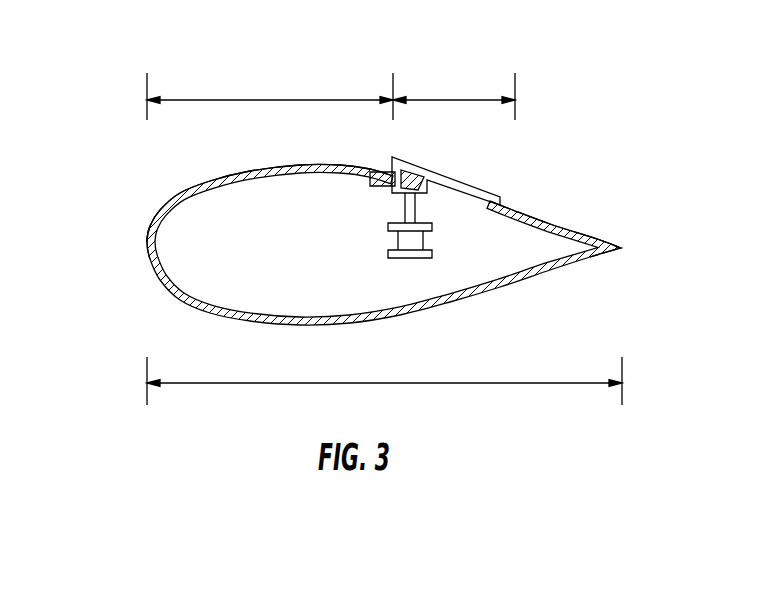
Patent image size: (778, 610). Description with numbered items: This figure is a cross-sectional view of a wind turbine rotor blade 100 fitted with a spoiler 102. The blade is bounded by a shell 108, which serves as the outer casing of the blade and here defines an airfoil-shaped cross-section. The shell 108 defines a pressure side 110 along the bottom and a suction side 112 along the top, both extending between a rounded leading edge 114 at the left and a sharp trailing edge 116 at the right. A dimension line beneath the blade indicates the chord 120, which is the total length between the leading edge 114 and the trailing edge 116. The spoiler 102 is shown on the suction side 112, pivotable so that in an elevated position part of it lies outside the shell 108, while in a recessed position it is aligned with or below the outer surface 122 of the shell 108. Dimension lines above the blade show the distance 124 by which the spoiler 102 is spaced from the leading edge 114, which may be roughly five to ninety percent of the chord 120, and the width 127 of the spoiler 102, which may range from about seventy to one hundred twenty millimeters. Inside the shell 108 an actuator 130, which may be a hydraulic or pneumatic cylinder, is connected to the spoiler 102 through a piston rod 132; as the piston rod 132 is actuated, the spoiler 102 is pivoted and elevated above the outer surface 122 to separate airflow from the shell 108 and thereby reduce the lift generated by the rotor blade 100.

The rotor blade 100 is at (543, 147).
The spoiler 102 is at (454, 179).
The shell 108 is at (557, 209).
The pressure side 110 is at (418, 309).
The suction side 112 is at (305, 162).
The leading edge 114 is at (147, 243).
The trailing edge 116 is at (624, 249).
The chord 120 is at (443, 384).
The outer surface 122 is at (200, 178).
The distance 124 is at (290, 99).
The width 127 is at (470, 99).
The actuator 130 is at (397, 238).
The piston rod 132 is at (405, 212).